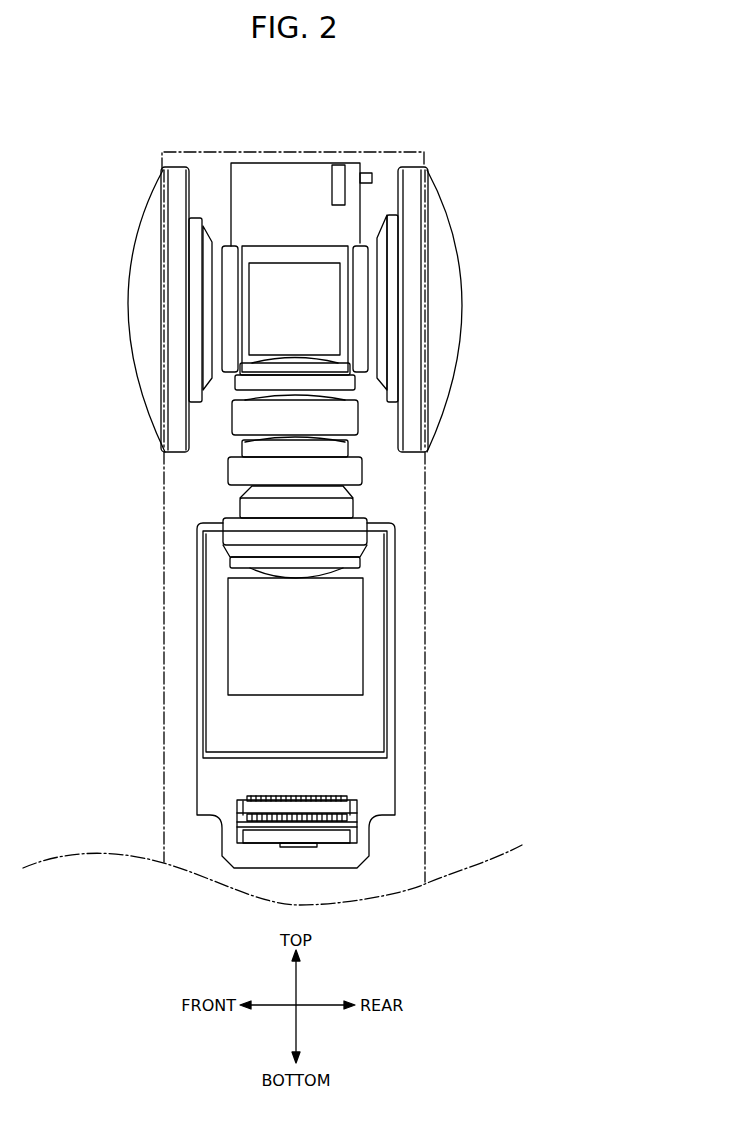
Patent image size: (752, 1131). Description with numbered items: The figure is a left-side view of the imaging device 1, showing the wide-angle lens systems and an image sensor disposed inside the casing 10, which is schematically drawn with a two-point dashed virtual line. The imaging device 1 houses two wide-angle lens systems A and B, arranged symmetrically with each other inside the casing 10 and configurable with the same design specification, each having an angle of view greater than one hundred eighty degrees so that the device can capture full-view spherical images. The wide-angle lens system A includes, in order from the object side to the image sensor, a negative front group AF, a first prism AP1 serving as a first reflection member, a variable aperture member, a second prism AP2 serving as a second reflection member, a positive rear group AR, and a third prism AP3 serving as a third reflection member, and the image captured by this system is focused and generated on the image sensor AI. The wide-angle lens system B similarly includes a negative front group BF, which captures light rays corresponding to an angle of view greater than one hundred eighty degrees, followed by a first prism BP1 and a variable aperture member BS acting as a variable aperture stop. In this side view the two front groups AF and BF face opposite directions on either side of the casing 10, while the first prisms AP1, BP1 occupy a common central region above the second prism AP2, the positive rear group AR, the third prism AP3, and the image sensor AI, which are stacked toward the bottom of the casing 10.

The imaging device 1 is at (530, 60).
The casing 10 is at (362, 150).
The wide-angle lens system A is at (82, 158).
The wide-angle lens system B is at (520, 156).
The negative front group AF is at (138, 289).
The negative front group BF is at (452, 289).
The first prism AP1 is at (276, 258).
The first prism BP1 is at (295, 309).
The variable aperture member BS is at (311, 176).
The second prism AP2 is at (315, 282).
The positive rear group AR is at (352, 475).
The image sensor AI is at (378, 585).
The third prism AP3 is at (352, 634).